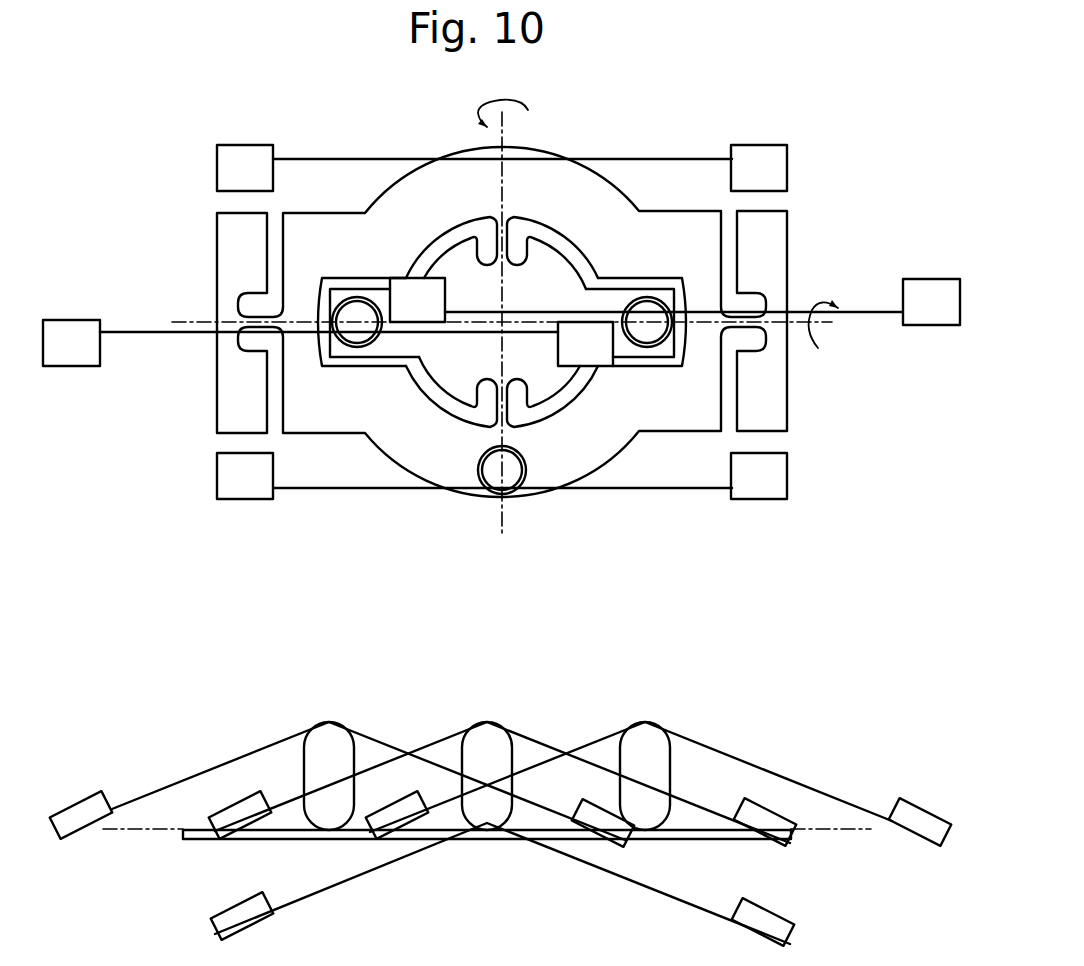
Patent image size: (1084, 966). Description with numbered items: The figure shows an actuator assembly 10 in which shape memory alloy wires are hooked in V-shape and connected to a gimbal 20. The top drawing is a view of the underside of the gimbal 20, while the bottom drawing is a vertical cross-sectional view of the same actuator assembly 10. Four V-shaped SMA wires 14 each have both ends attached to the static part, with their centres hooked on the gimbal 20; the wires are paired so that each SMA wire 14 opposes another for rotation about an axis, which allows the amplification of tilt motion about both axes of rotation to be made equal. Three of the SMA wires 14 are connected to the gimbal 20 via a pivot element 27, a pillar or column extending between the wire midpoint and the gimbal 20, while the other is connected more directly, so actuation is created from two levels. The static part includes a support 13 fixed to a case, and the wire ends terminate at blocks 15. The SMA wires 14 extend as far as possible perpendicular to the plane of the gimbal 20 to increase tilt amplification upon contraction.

The actuator assembly 10 is at (501, 504).
The support 13 is at (720, 839).
The SMA wires 14 is at (665, 158).
The mass / end block 15 is at (773, 145).
The gimbal 20 is at (679, 420).
The pivot element 27 is at (493, 471).